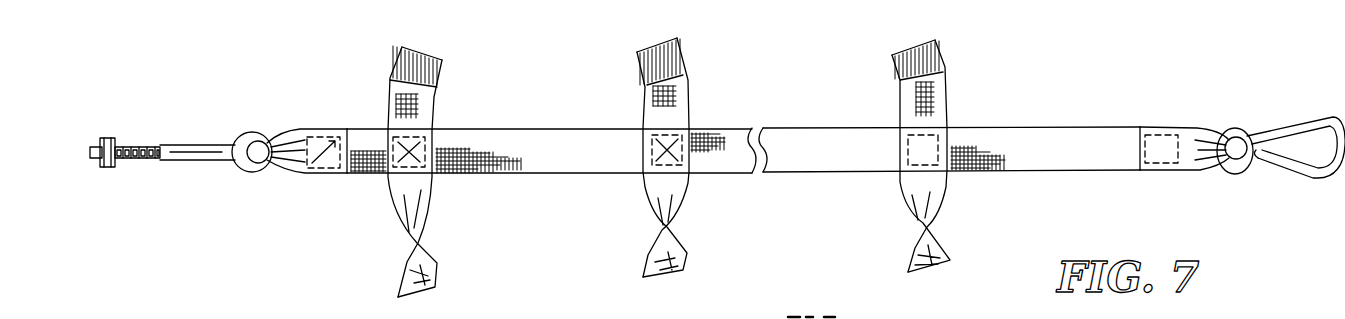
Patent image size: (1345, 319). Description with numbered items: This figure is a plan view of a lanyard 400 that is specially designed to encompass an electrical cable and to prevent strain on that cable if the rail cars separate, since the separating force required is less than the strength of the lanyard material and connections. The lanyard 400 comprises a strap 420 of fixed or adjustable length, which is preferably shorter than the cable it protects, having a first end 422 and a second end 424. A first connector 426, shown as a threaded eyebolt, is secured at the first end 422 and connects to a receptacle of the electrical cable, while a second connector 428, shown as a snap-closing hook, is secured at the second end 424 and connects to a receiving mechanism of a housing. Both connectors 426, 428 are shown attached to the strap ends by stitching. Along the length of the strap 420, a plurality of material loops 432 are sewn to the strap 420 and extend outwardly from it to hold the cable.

The lanyard 400 is at (719, 72).
The strap 420 is at (1020, 144).
The first end 422 is at (293, 143).
The second end 424 is at (1190, 128).
The first connector 426 is at (189, 152).
The second connector 428 is at (1292, 130).
The material loops 432 is at (412, 198).